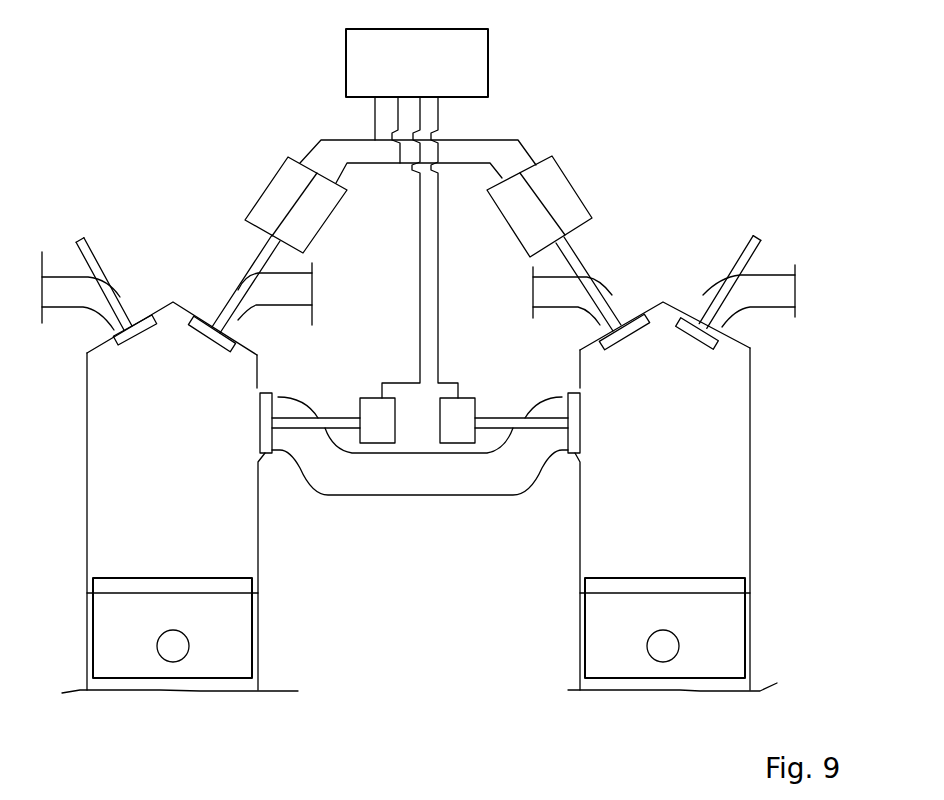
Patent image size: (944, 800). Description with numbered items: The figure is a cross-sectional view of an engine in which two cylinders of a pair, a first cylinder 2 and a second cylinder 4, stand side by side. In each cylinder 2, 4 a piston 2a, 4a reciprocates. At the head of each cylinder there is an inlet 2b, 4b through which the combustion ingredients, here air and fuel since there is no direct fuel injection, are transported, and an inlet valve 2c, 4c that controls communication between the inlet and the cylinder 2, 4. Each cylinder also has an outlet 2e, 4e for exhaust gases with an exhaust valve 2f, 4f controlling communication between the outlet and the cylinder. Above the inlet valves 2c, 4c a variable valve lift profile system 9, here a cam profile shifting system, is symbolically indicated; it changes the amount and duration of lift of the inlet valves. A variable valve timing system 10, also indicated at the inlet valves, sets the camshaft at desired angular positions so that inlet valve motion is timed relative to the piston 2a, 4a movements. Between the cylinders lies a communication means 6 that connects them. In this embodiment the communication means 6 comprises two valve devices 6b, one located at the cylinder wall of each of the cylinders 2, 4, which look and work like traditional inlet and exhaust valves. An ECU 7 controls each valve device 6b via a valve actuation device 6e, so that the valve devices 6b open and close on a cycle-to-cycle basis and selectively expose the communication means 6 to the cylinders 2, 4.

The first cylinder 2 is at (184, 514).
The piston 2a is at (238, 640).
The inlet 2b is at (257, 312).
The inlet valve 2c is at (196, 343).
The outlet 2e is at (83, 305).
The exhaust valve 2f is at (136, 344).
The second cylinder 4 is at (671, 514).
The piston 4a is at (595, 645).
The inlet 4b is at (582, 315).
The inlet valve 4c is at (620, 348).
The outlet 4e is at (763, 322).
The exhaust valve 4f is at (692, 336).
The communication means 6 is at (398, 487).
The valve device 6b is at (260, 415).
The valve actuation device 6e is at (368, 395).
The ECU 7 is at (425, 81).
The variable valve lift profile system 9 is at (262, 192).
The variable valve timing system 10 is at (329, 221).